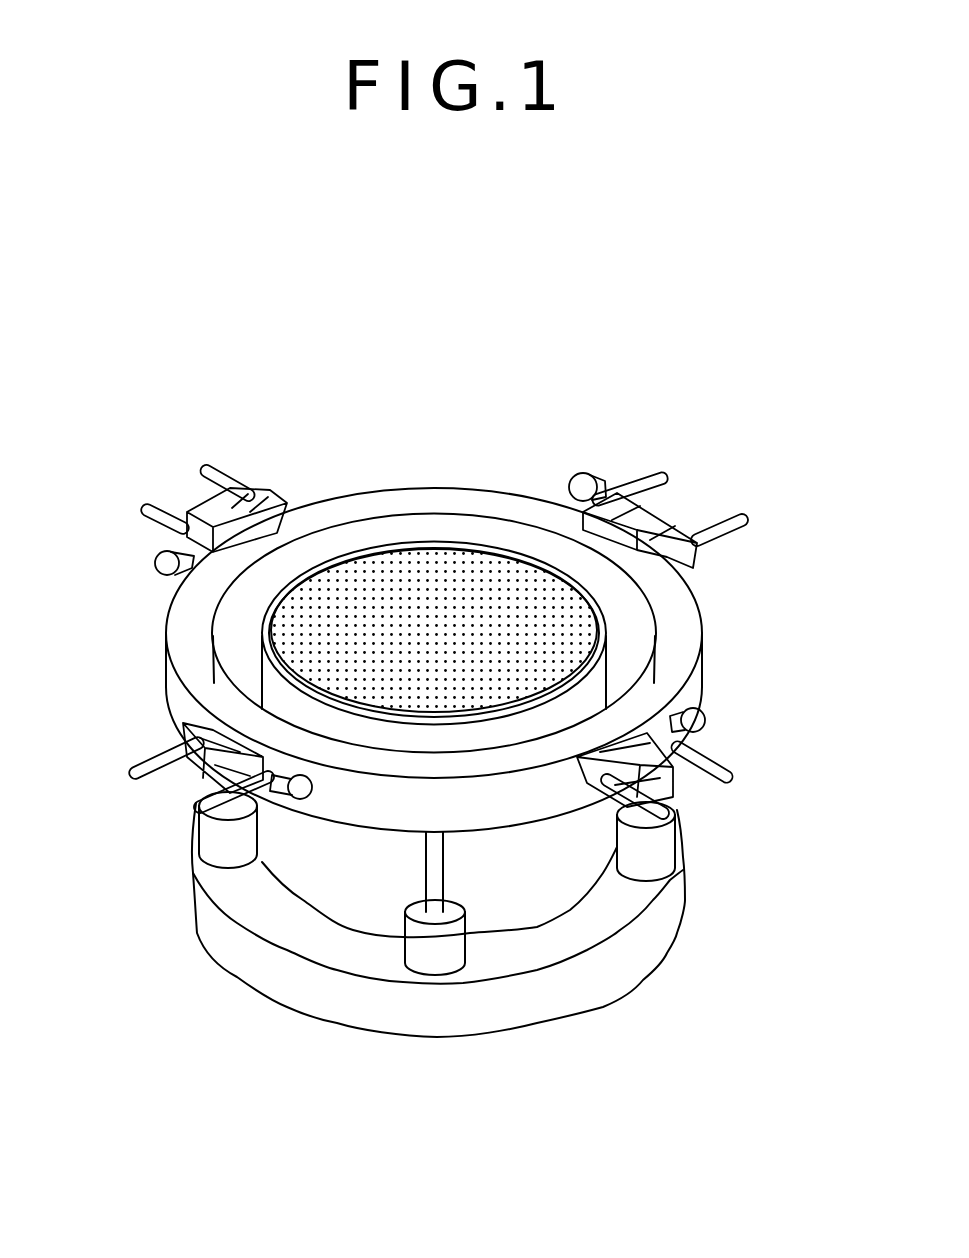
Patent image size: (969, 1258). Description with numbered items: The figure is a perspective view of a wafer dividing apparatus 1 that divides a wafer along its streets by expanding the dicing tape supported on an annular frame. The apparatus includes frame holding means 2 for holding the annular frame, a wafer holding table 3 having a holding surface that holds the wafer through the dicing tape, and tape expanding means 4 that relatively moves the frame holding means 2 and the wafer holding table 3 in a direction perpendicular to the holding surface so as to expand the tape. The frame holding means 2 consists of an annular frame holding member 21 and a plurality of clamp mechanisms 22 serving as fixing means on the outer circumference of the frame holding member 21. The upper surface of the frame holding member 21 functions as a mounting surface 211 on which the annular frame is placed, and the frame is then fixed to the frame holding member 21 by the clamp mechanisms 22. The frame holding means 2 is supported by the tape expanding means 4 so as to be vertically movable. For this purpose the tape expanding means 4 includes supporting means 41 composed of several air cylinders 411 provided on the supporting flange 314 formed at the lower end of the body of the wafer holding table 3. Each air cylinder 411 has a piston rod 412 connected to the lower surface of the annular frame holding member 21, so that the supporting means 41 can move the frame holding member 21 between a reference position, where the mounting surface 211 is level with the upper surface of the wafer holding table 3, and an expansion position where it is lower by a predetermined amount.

The wafer dividing apparatus 1 is at (587, 432).
The frame holding means 2 is at (435, 478).
The annular frame holding member 21 is at (400, 485).
The mounting surface 211 is at (362, 497).
The clamp mechanism 22 is at (237, 478).
The wafer holding table 3 is at (463, 535).
The supporting flange 314 is at (253, 898).
The tape expanding means 4 is at (330, 1037).
The supporting means 41 is at (467, 953).
The air cylinder 411 is at (430, 957).
The piston rod 412 is at (427, 866).